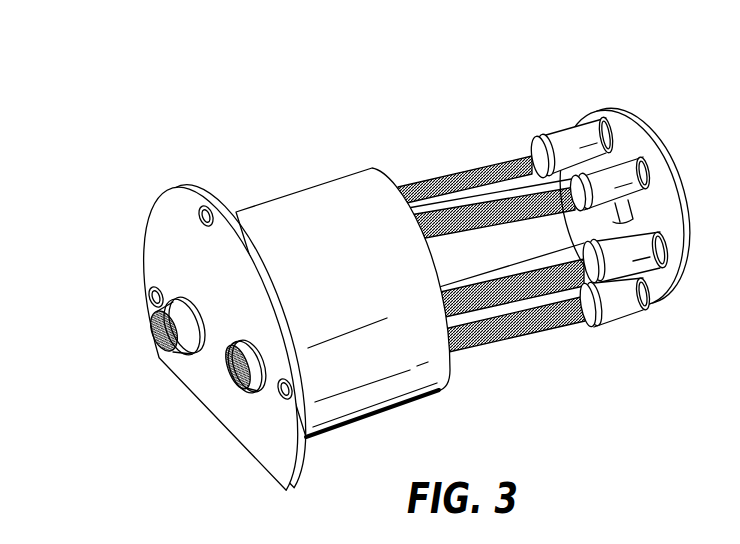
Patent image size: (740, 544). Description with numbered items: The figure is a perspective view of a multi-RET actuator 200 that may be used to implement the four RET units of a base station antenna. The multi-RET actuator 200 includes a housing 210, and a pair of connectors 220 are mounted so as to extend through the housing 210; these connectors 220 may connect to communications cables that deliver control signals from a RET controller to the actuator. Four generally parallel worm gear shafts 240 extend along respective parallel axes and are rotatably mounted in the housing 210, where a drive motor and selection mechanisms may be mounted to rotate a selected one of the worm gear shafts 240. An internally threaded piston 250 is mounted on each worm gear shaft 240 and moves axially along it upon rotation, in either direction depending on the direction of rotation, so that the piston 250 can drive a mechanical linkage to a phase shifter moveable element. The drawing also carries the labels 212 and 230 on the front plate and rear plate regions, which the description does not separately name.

The multi-RET actuator 200 is at (370, 254).
The housing 210 is at (299, 156).
The front mounting plate 212 is at (147, 223).
The connectors 220 is at (147, 327).
The rear plate 230 is at (557, 112).
The worm gear shafts 240 is at (447, 173).
The internally threaded piston 250 is at (622, 298).